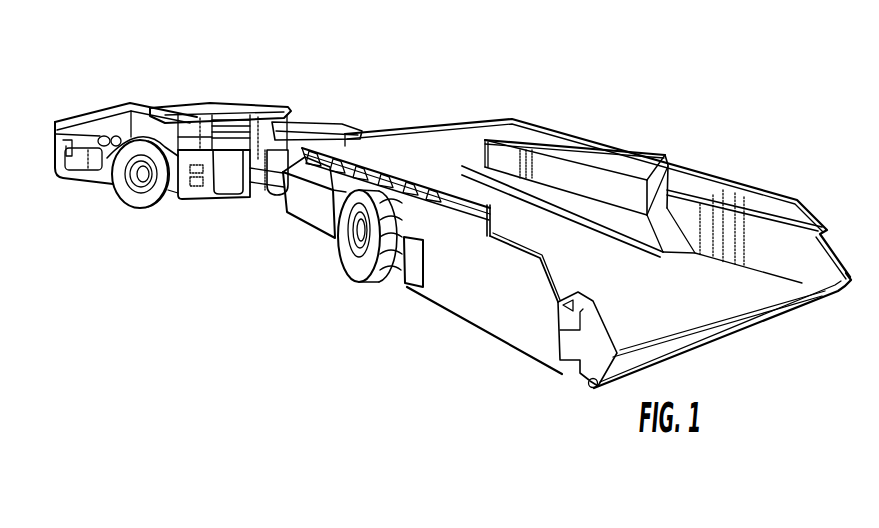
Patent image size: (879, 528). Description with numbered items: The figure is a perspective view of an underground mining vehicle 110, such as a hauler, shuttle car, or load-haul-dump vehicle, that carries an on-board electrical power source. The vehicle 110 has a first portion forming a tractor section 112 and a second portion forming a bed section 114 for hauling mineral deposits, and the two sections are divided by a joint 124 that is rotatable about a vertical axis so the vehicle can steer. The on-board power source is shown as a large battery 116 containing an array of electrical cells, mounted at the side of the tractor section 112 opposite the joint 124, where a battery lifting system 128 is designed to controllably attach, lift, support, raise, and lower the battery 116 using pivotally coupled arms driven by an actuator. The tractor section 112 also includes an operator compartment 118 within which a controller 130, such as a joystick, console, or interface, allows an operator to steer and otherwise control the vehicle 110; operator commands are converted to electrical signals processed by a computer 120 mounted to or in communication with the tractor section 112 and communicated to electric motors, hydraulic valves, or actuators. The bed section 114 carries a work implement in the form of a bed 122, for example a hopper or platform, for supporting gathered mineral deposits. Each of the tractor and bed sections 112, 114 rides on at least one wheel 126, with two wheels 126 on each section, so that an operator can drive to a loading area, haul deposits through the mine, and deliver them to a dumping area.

The underground mining vehicle 110 is at (214, 316).
The tractor section 112 is at (82, 236).
The bed section 114 is at (473, 359).
The battery 116 is at (72, 170).
The operator compartment 118 is at (243, 208).
The computer 120 is at (195, 188).
The bed 122 is at (537, 235).
The joint 124 is at (350, 128).
The wheel 126 is at (137, 209).
The battery lifting system 128 is at (188, 91).
The controller 130 is at (291, 128).